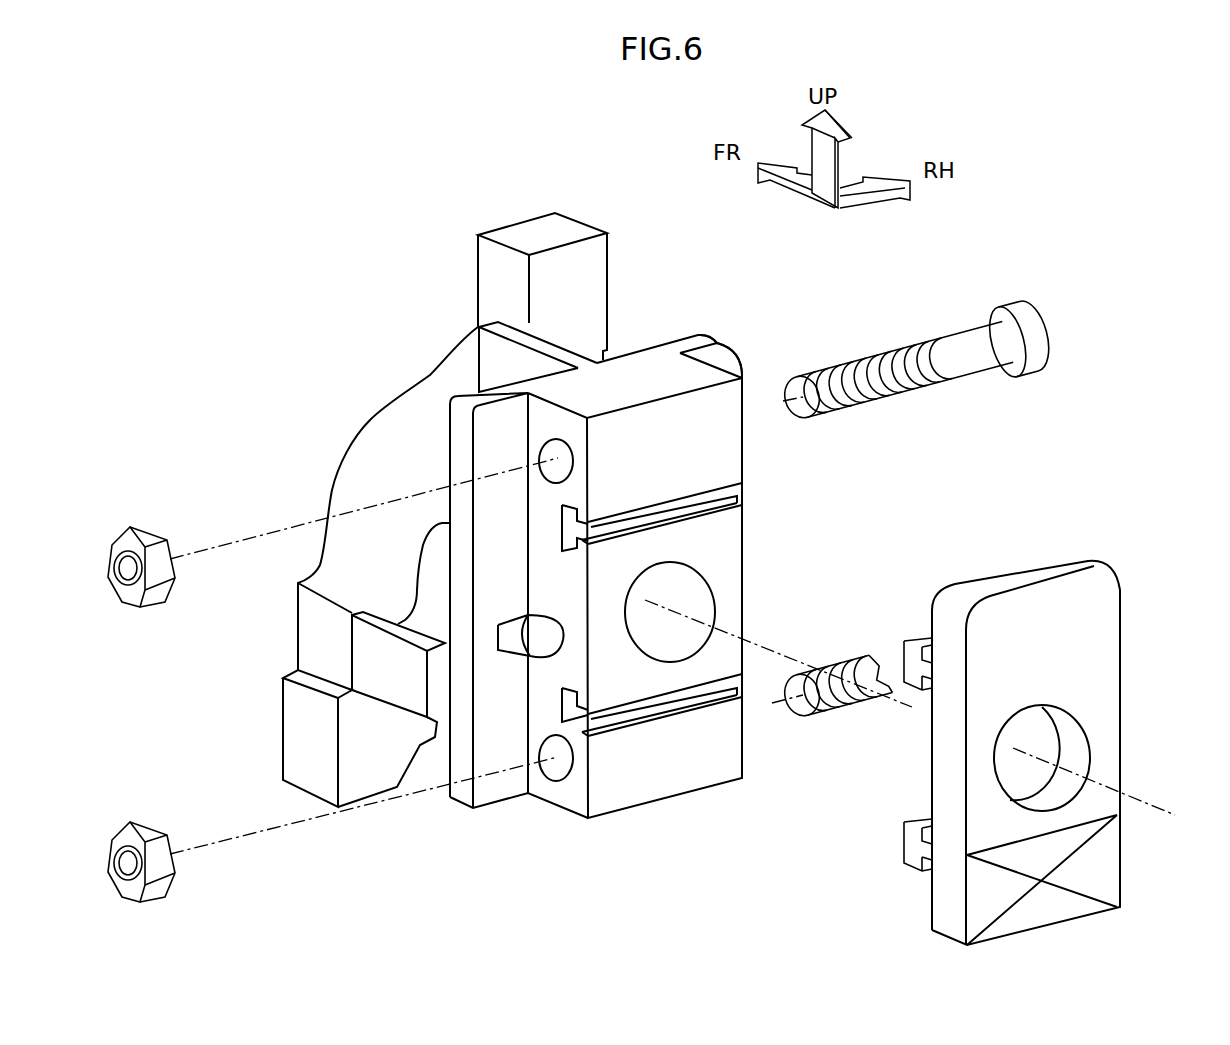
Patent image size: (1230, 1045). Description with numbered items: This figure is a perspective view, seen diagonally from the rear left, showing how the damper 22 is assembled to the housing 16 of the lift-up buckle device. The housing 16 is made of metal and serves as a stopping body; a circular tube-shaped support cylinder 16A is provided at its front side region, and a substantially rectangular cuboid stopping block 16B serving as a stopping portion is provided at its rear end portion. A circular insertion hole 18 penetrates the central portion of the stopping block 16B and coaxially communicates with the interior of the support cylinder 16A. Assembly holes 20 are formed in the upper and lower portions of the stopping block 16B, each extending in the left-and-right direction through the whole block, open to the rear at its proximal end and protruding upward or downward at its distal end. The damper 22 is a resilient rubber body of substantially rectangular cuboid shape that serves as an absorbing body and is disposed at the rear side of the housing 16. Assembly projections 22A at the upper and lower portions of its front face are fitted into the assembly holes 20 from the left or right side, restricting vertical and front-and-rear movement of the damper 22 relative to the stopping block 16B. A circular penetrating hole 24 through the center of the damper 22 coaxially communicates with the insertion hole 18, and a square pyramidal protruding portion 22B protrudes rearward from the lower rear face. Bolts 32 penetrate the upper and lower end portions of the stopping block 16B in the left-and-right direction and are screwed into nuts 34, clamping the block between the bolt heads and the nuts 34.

The housing 16 is at (607, 276).
The support cylinder 16A is at (368, 434).
The stopping block 16B is at (735, 355).
The insertion hole 18 is at (698, 592).
The assembly hole 20 is at (740, 501).
The damper 22 is at (1090, 561).
The assembly projection 22A is at (903, 638).
The protruding portion 22B is at (1000, 890).
The penetrating hole 24 is at (1073, 746).
The bolt 32 is at (953, 337).
The nut 34 is at (150, 527).